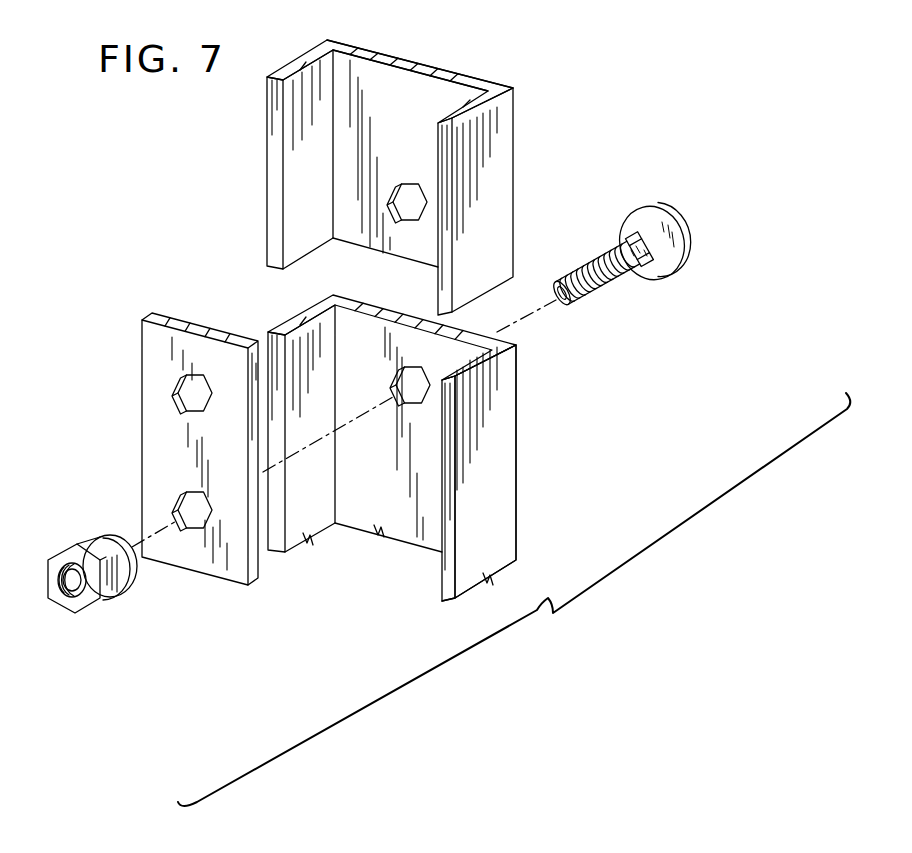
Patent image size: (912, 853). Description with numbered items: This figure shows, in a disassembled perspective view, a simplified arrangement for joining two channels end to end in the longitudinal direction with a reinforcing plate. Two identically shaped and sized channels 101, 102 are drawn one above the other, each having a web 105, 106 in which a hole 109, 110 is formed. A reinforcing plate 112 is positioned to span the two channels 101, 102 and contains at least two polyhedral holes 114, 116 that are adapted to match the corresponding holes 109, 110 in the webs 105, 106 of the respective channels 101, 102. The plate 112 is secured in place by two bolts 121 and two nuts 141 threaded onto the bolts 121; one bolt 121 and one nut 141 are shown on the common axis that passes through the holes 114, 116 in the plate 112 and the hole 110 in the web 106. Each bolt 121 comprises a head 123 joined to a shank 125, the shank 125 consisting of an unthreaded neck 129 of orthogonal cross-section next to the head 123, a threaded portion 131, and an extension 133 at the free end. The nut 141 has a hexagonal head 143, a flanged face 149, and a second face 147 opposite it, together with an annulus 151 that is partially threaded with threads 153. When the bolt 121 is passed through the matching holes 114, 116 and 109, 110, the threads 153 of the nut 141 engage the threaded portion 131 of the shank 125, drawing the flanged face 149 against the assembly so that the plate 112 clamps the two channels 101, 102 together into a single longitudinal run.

The channel 101 is at (517, 115).
The channel 102 is at (518, 530).
The web 105 is at (370, 57).
The web 106 is at (395, 533).
The hole 109 is at (407, 187).
The hole 110 is at (420, 388).
The reinforcing plate 112 is at (197, 325).
The polyhedral hole 114 is at (195, 390).
The polyhedral hole 116 is at (197, 523).
The bolt 121 is at (654, 250).
The head 123 is at (643, 208).
The shank 125 is at (602, 293).
The unthreaded neck 129 is at (668, 270).
The threaded portion 131 is at (597, 250).
The extension 133 is at (562, 300).
The nut 141 is at (86, 552).
The hexagonal head 143 is at (108, 600).
The second face 147 is at (82, 607).
The flanged face 149 is at (118, 537).
The annulus 151 is at (65, 595).
The threads 153 is at (70, 572).